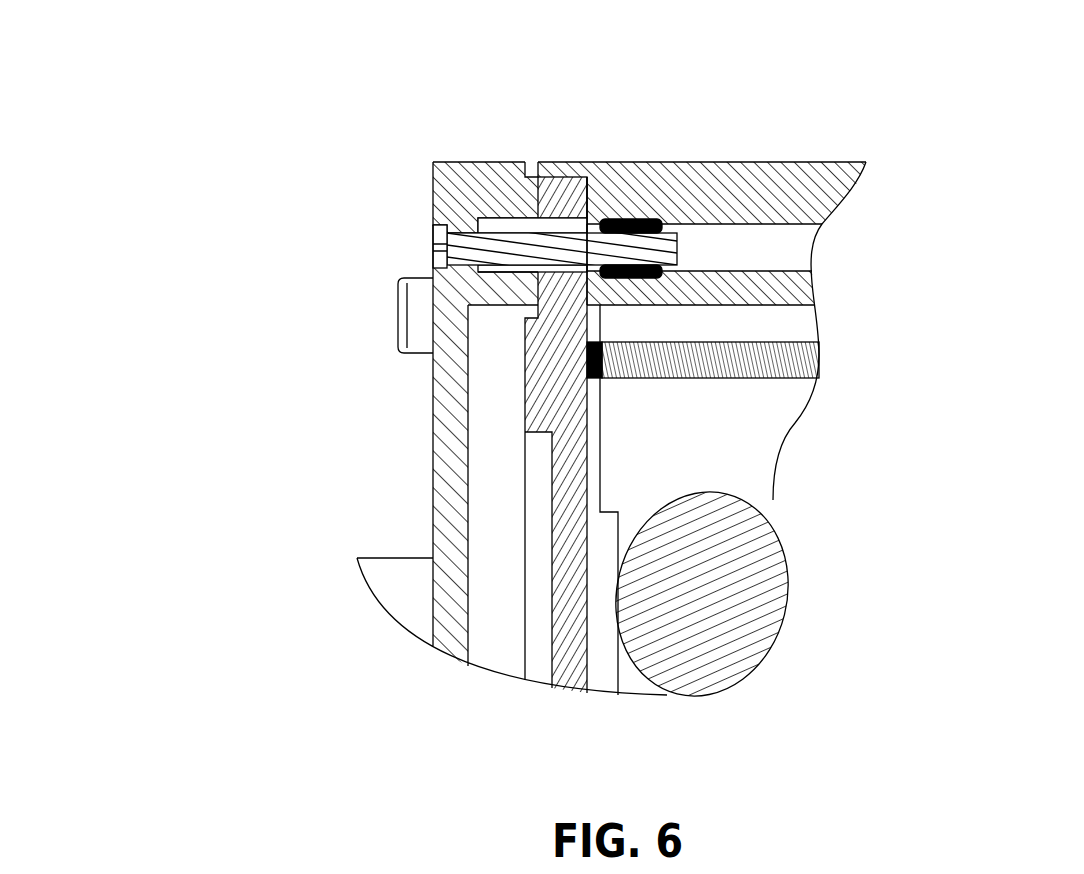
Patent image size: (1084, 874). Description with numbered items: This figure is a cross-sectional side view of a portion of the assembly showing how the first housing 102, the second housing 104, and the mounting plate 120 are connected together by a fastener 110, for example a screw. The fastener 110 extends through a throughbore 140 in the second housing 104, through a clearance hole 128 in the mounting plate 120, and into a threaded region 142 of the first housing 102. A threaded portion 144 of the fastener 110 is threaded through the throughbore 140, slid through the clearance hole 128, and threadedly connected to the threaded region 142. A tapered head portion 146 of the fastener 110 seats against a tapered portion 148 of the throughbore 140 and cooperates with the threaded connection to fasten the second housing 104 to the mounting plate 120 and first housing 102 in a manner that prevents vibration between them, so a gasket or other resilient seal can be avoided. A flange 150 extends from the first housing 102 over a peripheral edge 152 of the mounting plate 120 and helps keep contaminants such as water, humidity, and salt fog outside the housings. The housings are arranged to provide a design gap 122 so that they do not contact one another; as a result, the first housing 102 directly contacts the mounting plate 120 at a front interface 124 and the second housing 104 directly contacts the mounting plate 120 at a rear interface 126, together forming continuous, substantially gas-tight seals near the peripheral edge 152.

The first housing 102 is at (670, 147).
The second housing 104 is at (419, 401).
The fastener 110 is at (419, 253).
The mounting plate 120 is at (539, 485).
The design gap 122 is at (514, 143).
The front interface 124 is at (603, 194).
The rear interface 126 is at (527, 201).
The clearance hole 128 is at (470, 182).
The throughbore 140 is at (485, 282).
The threaded region 142 is at (678, 276).
The threaded portion 144 is at (675, 231).
The tapered head portion 146 is at (432, 218).
The tapered portion 148 is at (455, 214).
The flange 150 is at (562, 171).
The peripheral edge 152 is at (560, 185).